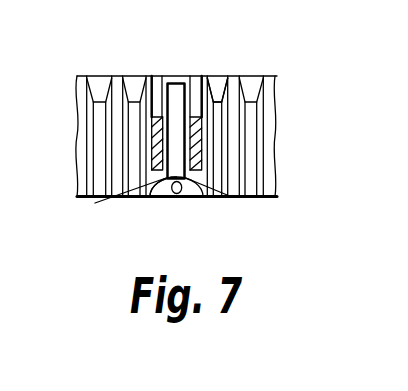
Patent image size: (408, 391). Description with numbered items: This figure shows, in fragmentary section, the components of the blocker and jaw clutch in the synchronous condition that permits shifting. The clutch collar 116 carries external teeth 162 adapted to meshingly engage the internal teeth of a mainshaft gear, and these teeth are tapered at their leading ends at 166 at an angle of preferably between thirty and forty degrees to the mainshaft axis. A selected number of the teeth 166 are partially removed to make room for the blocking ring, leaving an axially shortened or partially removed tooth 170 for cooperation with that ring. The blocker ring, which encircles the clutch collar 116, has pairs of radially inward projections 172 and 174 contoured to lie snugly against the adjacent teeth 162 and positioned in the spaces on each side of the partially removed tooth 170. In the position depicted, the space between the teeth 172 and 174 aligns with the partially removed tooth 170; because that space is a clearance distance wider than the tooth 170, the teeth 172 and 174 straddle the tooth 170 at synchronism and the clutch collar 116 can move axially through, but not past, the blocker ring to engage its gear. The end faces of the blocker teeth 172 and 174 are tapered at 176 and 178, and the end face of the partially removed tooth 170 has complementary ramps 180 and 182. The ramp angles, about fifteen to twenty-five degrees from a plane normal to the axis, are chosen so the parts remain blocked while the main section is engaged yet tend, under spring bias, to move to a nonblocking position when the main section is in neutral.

The clutch collar 116 is at (280, 72).
The external teeth 162 is at (126, 198).
The tapered ends of teeth 166 is at (209, 95).
The partially removed tooth 170 is at (177, 194).
The radially inward projection 172 is at (194, 100).
The radially inward projection 174 is at (160, 115).
The taper 176 is at (232, 198).
The taper 178 is at (95, 203).
The ramp 180 is at (203, 196).
The ramp 182 is at (148, 197).